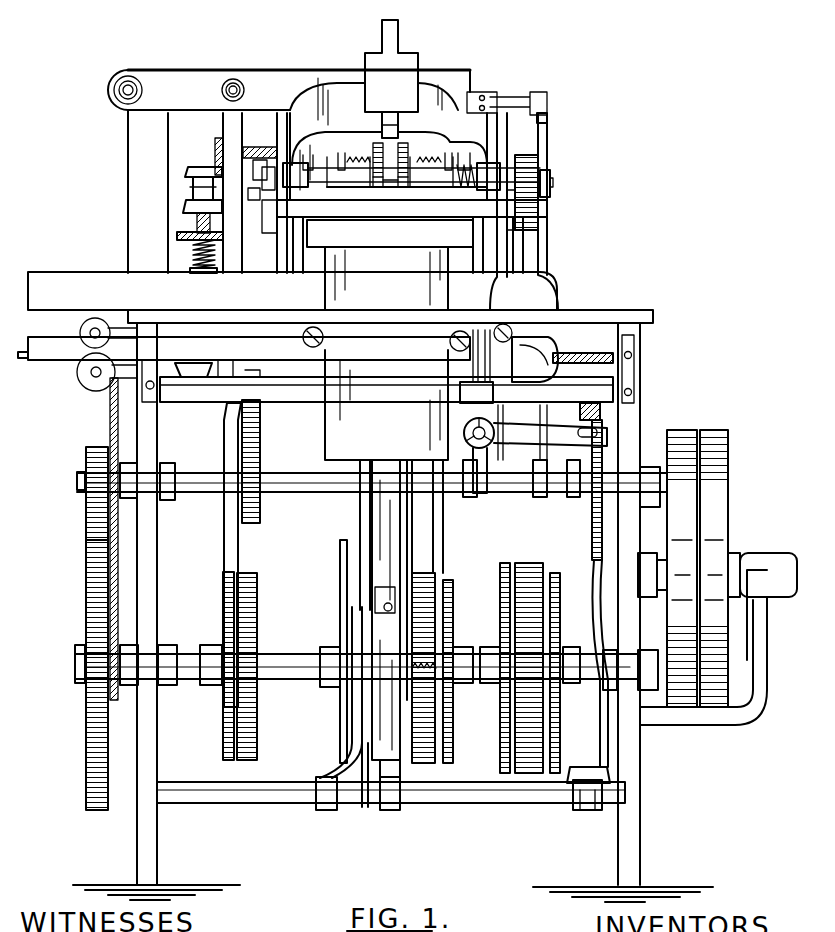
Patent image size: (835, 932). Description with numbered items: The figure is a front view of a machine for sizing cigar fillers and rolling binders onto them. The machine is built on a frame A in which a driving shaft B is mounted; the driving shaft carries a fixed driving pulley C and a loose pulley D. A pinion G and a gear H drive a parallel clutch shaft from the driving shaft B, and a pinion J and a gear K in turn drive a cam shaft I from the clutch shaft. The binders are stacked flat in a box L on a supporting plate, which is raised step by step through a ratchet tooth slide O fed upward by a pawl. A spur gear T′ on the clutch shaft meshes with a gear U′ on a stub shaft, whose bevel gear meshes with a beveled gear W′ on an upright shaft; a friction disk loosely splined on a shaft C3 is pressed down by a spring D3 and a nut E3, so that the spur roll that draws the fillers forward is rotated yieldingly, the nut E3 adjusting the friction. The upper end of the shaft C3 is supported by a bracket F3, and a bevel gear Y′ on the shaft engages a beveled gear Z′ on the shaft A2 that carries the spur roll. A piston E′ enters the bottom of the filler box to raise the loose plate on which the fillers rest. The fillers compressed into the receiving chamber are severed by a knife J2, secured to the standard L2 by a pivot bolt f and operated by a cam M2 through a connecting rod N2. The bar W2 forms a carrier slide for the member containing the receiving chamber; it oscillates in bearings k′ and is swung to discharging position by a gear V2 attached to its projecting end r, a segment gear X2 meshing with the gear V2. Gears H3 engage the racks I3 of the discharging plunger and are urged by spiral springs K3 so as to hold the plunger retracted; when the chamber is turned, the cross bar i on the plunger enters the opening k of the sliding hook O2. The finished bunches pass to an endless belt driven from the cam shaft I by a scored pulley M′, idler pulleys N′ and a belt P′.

The sliding hook O2 is at (390, 43).
The opening of the hook k is at (402, 128).
The knife J2 is at (437, 80).
The spiral springs K3 is at (350, 157).
The gears H3 is at (373, 157).
The bar W2 is at (390, 182).
The racks I3 is at (377, 180).
The cross bar i is at (385, 182).
The box L is at (357, 283).
The beveled gear Z′ is at (217, 137).
The bevel gear Y′ is at (203, 162).
The bracket F3 is at (203, 191).
The shaft C3 is at (197, 218).
The nut E3 is at (253, 208).
The spring D3 is at (197, 253).
The projecting end of the bar r is at (253, 192).
The standard L2 is at (142, 158).
The pivot bolt f is at (122, 100).
The shaft A2 is at (247, 150).
The bearing k′ is at (273, 165).
The gear V2 is at (545, 167).
The segment gear X2 is at (533, 223).
The idler pulleys N′ is at (80, 323).
The ratchet tooth slide O is at (200, 253).
The beveled gear W′ is at (200, 370).
The belt P′ is at (112, 410).
The pinion J is at (95, 458).
The gear K is at (93, 606).
The gear U′ is at (247, 433).
The spur gear T′ is at (257, 467).
The piston E′ is at (333, 487).
The connecting rod N2 is at (230, 555).
The cam M2 is at (248, 613).
The scored pulley M′ is at (133, 645).
The cam shaft I is at (292, 648).
The frame A is at (635, 420).
The fixed driving pulley C is at (682, 435).
The loose pulley D is at (717, 430).
The gear H is at (603, 500).
The driving shaft B is at (742, 553).
The pinion G is at (598, 550).